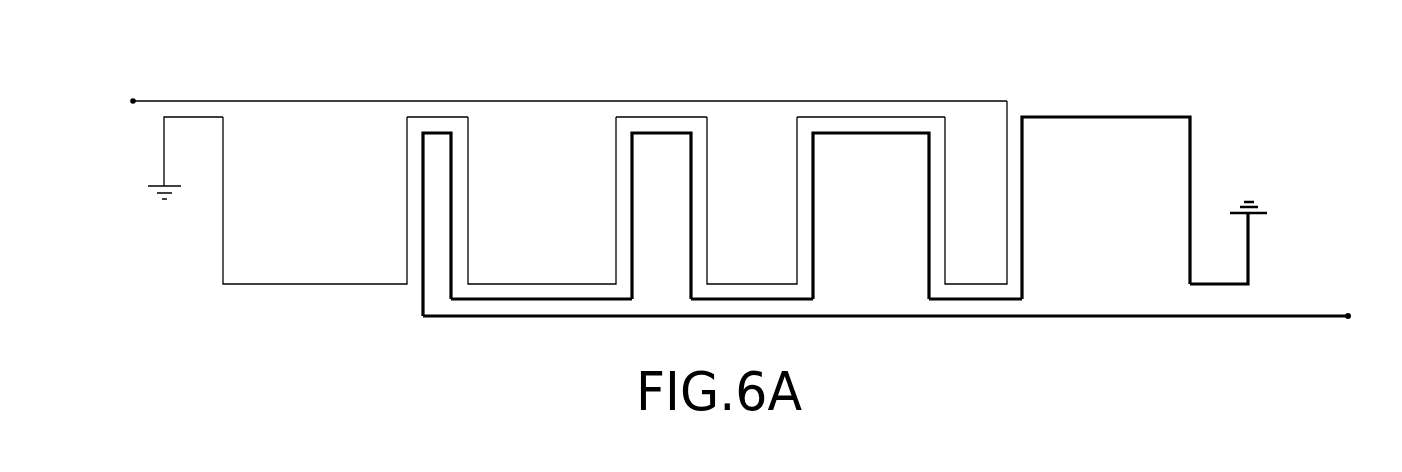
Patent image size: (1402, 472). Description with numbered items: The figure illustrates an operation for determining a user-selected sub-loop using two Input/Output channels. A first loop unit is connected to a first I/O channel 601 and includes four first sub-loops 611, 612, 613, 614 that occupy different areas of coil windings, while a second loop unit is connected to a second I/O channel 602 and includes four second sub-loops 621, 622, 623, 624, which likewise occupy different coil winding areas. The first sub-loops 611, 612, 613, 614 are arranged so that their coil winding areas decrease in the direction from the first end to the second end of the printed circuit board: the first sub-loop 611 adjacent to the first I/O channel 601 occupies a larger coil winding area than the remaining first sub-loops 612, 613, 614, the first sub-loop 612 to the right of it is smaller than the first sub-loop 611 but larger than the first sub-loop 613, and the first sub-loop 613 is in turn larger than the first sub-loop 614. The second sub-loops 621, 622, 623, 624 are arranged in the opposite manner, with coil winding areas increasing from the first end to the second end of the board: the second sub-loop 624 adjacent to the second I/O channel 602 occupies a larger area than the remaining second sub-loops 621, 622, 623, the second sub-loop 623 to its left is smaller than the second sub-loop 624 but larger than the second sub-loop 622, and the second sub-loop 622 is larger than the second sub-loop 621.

The first I/O channel 601 is at (133, 98).
The second I/O channel 602 is at (1348, 312).
The first sub-loop 611 is at (314, 283).
The first sub-loop 612 is at (540, 283).
The first sub-loop 613 is at (751, 283).
The first sub-loop 614 is at (974, 283).
The second sub-loop 621 is at (434, 132).
The second sub-loop 622 is at (657, 132).
The second sub-loop 623 is at (868, 132).
The second sub-loop 624 is at (1104, 116).